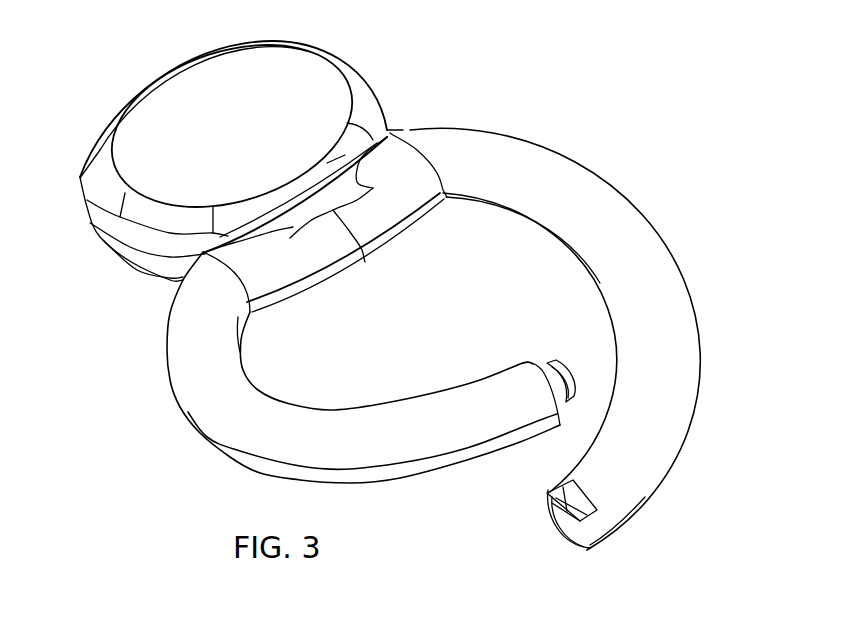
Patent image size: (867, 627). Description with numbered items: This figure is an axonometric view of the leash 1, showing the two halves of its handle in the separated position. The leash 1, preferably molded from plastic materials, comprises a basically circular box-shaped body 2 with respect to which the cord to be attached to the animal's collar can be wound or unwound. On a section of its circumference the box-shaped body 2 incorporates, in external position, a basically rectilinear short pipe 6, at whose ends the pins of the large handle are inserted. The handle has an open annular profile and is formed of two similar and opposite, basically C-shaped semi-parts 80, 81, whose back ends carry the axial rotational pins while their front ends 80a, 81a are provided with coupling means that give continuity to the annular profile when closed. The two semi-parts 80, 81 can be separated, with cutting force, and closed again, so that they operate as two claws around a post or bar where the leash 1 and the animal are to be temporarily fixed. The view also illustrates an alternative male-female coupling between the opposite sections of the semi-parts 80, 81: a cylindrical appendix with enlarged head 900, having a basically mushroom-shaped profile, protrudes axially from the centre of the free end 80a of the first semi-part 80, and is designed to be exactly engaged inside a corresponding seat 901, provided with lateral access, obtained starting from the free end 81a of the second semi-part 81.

The leash 1 is at (110, 341).
The box-shaped body 2 is at (163, 110).
The short pipe 6 is at (288, 265).
The first semi-part 80 is at (313, 435).
The free end of the first semi-part 80a is at (533, 356).
The second semi-part 81 is at (607, 222).
The free end of the second semi-part 81a is at (580, 547).
The cylindrical appendix with enlarged head 900 is at (568, 370).
The seat 901 is at (549, 515).